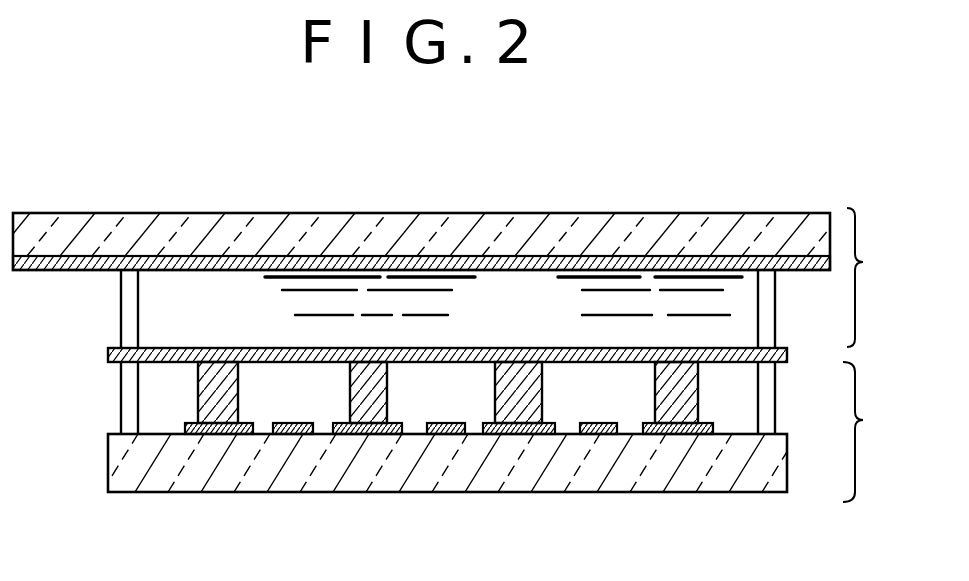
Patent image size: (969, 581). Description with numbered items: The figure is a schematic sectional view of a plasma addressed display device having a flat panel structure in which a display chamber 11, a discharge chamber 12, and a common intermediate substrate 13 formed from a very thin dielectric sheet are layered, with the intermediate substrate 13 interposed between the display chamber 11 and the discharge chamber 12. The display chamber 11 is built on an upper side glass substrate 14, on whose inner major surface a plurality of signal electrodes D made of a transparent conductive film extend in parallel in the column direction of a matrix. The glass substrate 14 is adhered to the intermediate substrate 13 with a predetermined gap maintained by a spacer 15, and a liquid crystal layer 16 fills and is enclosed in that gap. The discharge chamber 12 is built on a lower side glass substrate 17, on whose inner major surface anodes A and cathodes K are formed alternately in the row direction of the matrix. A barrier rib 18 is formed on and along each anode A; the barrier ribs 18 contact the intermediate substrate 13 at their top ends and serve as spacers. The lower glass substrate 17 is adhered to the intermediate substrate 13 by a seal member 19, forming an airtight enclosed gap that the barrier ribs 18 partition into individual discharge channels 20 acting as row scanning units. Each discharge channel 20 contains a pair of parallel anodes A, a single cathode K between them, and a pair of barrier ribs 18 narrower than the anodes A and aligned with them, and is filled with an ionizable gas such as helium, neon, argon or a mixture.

The display chamber 11 is at (875, 277).
The discharge chamber 12 is at (871, 432).
The intermediate substrate 13 is at (787, 353).
The upper side glass substrate 14 is at (565, 228).
The spacer 15 is at (775, 303).
The liquid crystal layer 16 is at (218, 290).
The lower side glass substrate 17 is at (500, 475).
The barrier rib 18 is at (537, 390).
The seal member 19 is at (120, 408).
The discharge channel 20 is at (265, 397).
The anode A is at (212, 435).
The cathode K is at (300, 434).
The signal electrode D is at (70, 272).